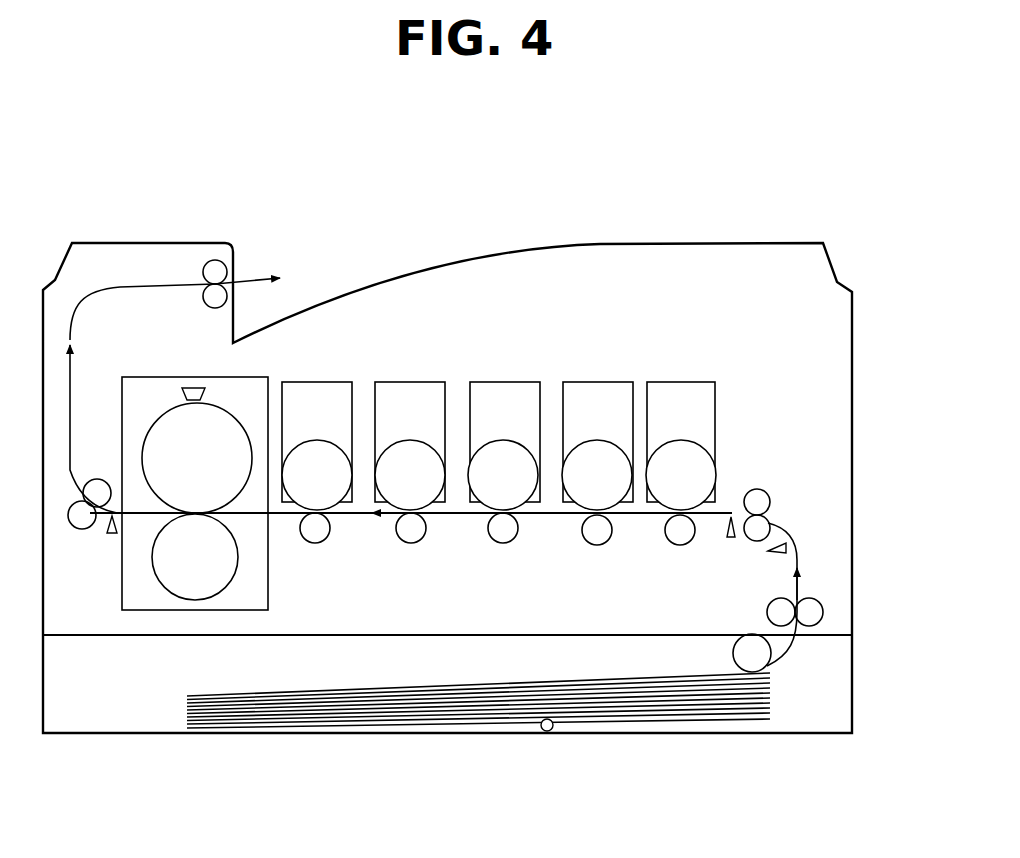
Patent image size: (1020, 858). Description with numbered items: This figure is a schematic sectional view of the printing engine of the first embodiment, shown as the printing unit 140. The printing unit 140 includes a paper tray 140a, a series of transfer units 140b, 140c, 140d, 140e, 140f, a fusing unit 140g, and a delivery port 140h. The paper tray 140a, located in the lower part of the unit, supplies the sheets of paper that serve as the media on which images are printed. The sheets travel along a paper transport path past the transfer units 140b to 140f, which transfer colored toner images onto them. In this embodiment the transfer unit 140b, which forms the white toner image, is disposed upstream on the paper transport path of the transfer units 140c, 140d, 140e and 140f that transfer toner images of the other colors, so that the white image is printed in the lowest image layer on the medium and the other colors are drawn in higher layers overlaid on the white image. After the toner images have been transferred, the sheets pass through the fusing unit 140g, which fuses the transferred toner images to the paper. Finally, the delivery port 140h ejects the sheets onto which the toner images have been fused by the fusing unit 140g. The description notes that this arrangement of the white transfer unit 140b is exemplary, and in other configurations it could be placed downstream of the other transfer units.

The printing unit 140 is at (770, 155).
The paper tray 140a is at (797, 687).
The transfer unit 140b is at (677, 381).
The transfer unit 140c is at (594, 381).
The transfer unit 140d is at (502, 381).
The transfer unit 140e is at (409, 381).
The transfer unit 140f is at (318, 381).
The fusing unit 140g is at (268, 590).
The delivery port 140h is at (233, 268).